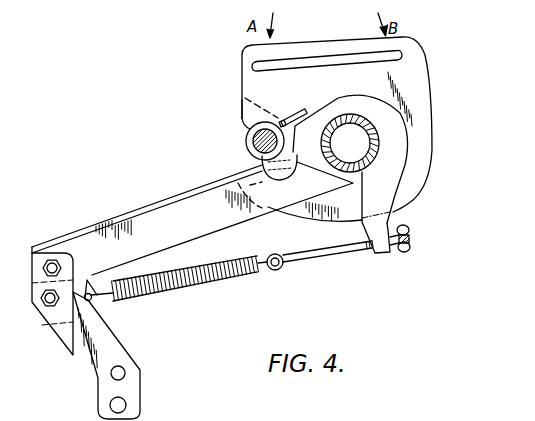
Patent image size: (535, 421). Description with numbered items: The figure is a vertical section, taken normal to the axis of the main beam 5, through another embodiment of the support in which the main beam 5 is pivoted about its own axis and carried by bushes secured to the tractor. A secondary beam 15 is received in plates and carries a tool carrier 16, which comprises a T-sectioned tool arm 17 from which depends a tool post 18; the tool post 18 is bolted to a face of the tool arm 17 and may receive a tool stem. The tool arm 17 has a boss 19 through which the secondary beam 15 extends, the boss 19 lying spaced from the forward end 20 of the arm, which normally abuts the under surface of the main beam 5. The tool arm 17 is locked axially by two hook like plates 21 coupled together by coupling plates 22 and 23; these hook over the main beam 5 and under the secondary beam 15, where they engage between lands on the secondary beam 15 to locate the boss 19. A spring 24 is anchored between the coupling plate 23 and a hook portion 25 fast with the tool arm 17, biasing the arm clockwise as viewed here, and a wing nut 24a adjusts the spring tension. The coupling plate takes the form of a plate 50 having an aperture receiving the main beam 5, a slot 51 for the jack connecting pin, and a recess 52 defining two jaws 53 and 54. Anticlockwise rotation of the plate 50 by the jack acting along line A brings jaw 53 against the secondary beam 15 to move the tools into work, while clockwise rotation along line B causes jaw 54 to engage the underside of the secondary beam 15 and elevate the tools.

The main beam 5 is at (356, 151).
The secondary beam 15 is at (253, 142).
The tool carrier 16 is at (109, 217).
The tool arm 17 is at (162, 213).
The tool post 18 is at (72, 352).
The boss 19 is at (247, 132).
The forward end 20 is at (325, 178).
The hook like plate 21 is at (327, 112).
The coupling plate 22 is at (295, 117).
The coupling plate 23 is at (393, 253).
The spring 24 is at (233, 282).
The wing nut 24a is at (400, 229).
The hook portion 25 is at (102, 302).
The plate 50 is at (415, 53).
The slot 51 is at (323, 55).
The recess 52 is at (245, 98).
The jaw 53 is at (243, 120).
The jaw 54 is at (238, 176).